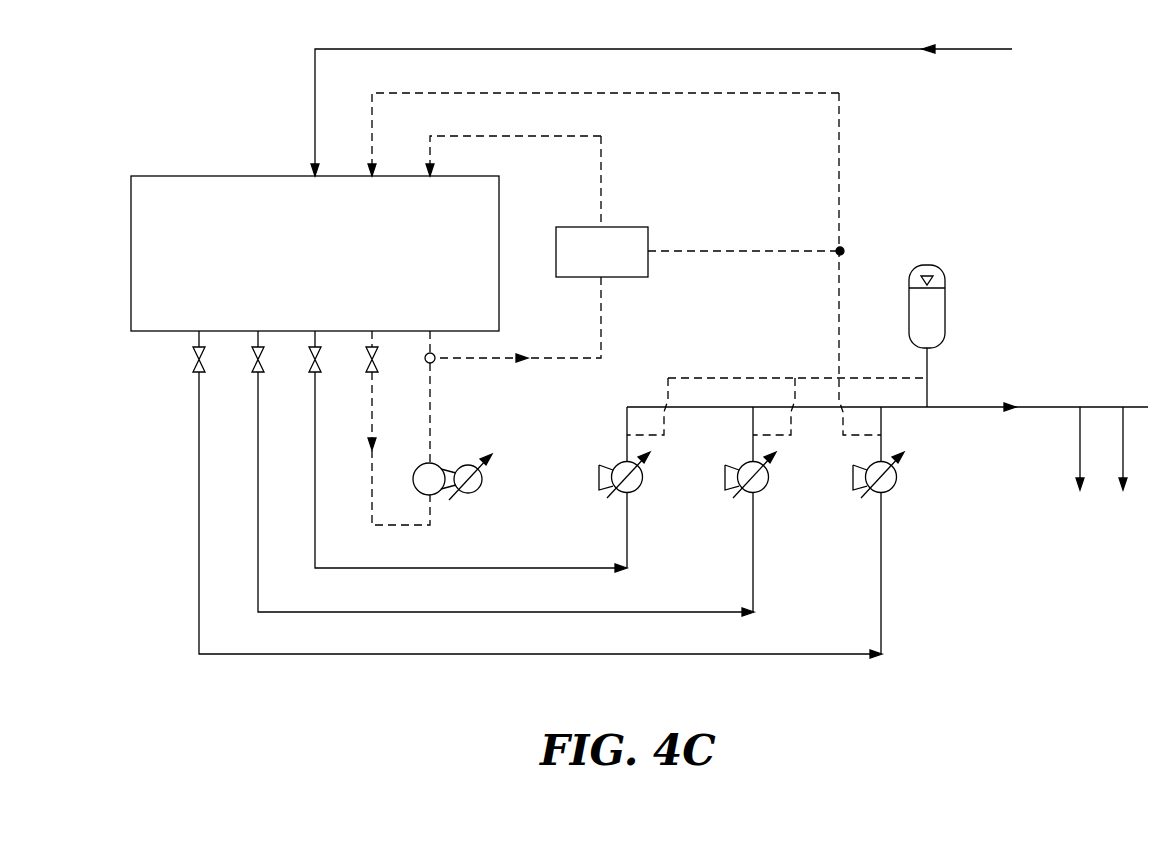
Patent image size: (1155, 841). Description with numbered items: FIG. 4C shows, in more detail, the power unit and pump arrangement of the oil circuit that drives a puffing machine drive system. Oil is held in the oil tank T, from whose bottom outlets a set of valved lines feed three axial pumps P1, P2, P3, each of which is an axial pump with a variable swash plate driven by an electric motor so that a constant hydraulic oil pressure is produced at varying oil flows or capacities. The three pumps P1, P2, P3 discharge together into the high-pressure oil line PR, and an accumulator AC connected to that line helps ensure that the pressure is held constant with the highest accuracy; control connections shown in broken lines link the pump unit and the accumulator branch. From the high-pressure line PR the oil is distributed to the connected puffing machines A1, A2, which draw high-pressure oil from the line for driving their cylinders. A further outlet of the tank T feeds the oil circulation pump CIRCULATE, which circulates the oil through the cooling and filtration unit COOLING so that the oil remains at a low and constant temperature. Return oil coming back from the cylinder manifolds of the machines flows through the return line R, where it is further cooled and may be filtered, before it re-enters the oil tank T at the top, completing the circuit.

The oil tank T is at (315, 253).
The return line R is at (661, 100).
The cooling and filtration unit COOLING is at (630, 249).
The oil circulation pump CIRCULATE is at (460, 467).
The axial pump P1 is at (626, 487).
The axial pump P2 is at (752, 509).
The axial pump P3 is at (880, 530).
The accumulator AC is at (915, 336).
The high-pressure oil line PR is at (887, 391).
The puffing machine A1 is at (1081, 466).
The puffing machine A2 is at (1124, 466).